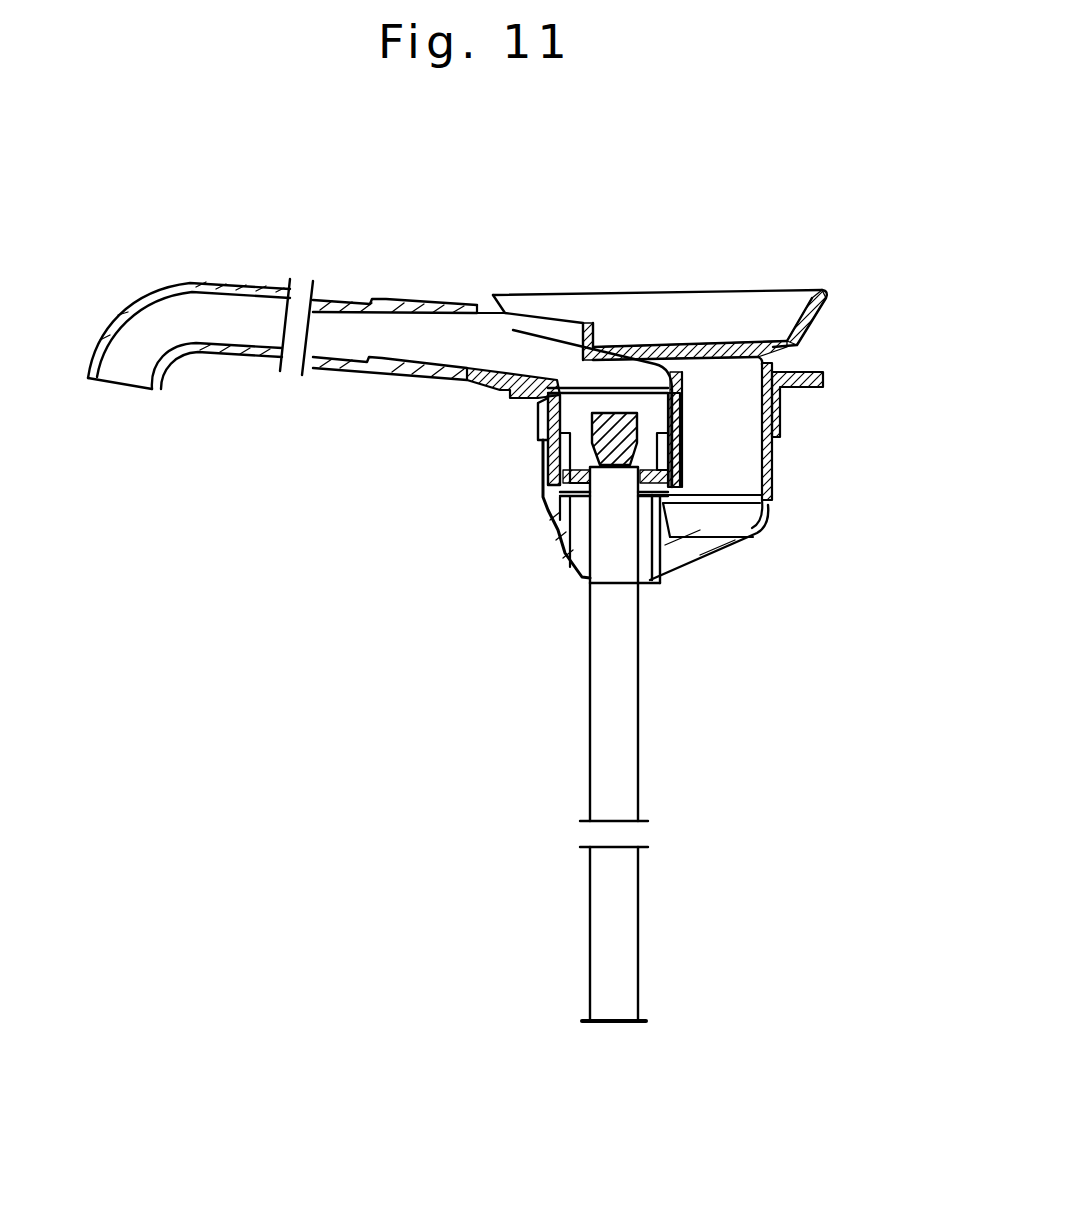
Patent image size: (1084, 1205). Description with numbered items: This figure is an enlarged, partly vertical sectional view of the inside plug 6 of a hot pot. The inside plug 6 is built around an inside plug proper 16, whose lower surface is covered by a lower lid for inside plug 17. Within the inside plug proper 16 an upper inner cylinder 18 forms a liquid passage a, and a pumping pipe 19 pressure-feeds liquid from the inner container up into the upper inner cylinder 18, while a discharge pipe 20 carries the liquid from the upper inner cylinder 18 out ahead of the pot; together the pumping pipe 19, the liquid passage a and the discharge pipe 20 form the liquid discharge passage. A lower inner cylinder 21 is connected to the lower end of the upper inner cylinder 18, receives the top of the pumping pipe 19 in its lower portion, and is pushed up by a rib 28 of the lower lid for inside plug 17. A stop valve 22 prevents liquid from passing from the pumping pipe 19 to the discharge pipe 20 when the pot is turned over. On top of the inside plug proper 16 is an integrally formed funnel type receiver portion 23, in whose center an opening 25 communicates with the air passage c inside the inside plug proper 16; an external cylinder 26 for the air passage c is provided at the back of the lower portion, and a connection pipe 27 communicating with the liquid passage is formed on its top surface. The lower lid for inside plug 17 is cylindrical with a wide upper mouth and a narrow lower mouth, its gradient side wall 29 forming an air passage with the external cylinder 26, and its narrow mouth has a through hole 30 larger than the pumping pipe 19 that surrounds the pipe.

The inside plug 6 is at (836, 286).
The inside plug proper 16 is at (542, 475).
The lower lid for inside plug 17 is at (563, 568).
The upper inner cylinder 18 is at (805, 387).
The pumping pipe 19 is at (624, 975).
The discharge pipe 20 is at (240, 348).
The lower inner cylinder 21 is at (663, 463).
The stop valve 22 is at (620, 423).
The funnel type receiver portion 23 is at (747, 313).
The opening 25 is at (682, 355).
The external cylinder 26 is at (767, 463).
The connection pipe 27 is at (487, 385).
The rib 28 is at (658, 540).
The side wall 29 is at (723, 553).
The through hole 30 is at (647, 587).
The liquid passage a is at (598, 403).
The air passage c is at (737, 390).